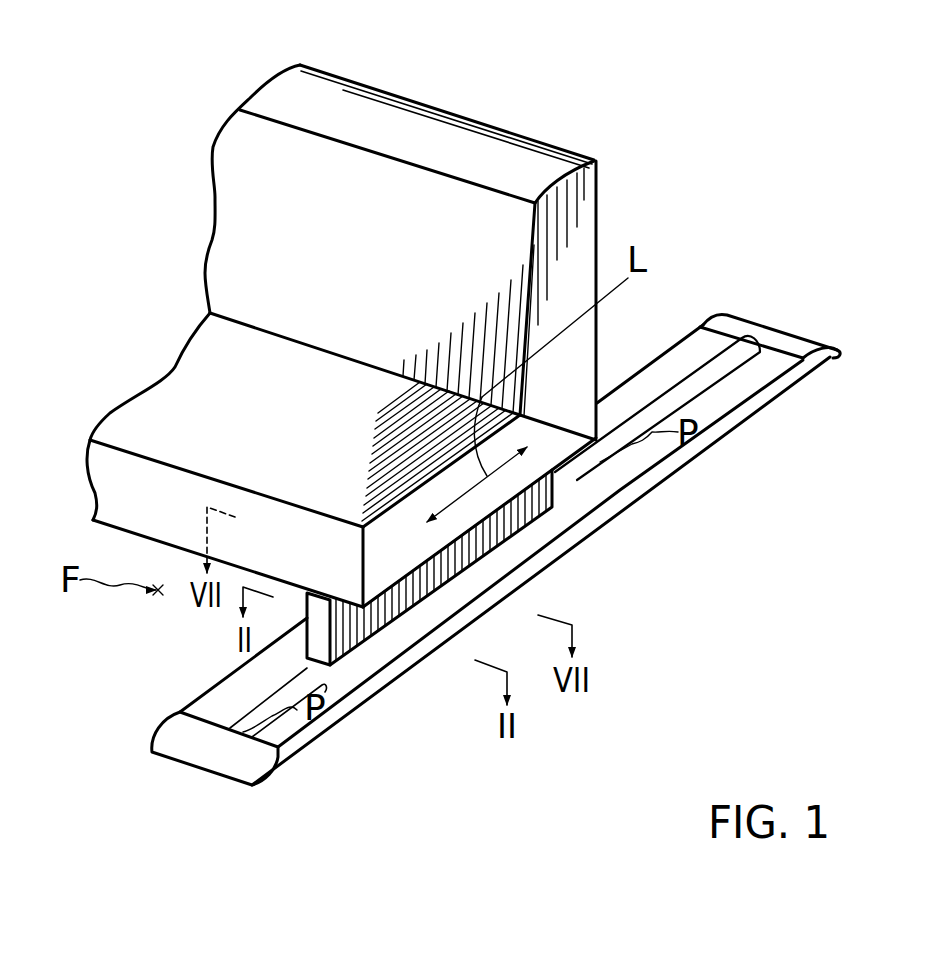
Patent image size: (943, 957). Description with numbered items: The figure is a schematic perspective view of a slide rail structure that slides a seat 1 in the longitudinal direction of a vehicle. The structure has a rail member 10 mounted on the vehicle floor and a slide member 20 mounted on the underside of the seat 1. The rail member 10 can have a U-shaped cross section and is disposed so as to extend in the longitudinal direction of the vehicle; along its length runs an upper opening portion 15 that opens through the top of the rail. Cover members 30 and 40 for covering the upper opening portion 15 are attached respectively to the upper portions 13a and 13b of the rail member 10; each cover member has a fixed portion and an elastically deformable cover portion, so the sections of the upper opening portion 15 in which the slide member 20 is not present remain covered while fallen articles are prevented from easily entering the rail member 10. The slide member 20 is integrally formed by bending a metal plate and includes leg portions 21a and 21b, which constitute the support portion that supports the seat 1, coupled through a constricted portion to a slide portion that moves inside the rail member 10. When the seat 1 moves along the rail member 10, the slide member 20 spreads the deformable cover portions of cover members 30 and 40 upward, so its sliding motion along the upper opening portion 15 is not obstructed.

The seat 1 is at (483, 122).
The rail member 10 is at (515, 581).
The upper portion 13a is at (708, 410).
The upper portion 13b is at (680, 370).
The upper opening portion 15 is at (609, 450).
The slide member 20 is at (548, 567).
The leg portion 21a is at (528, 565).
The leg portion 21b is at (519, 514).
The cover member 30 is at (279, 728).
The cover member 40 is at (219, 711).